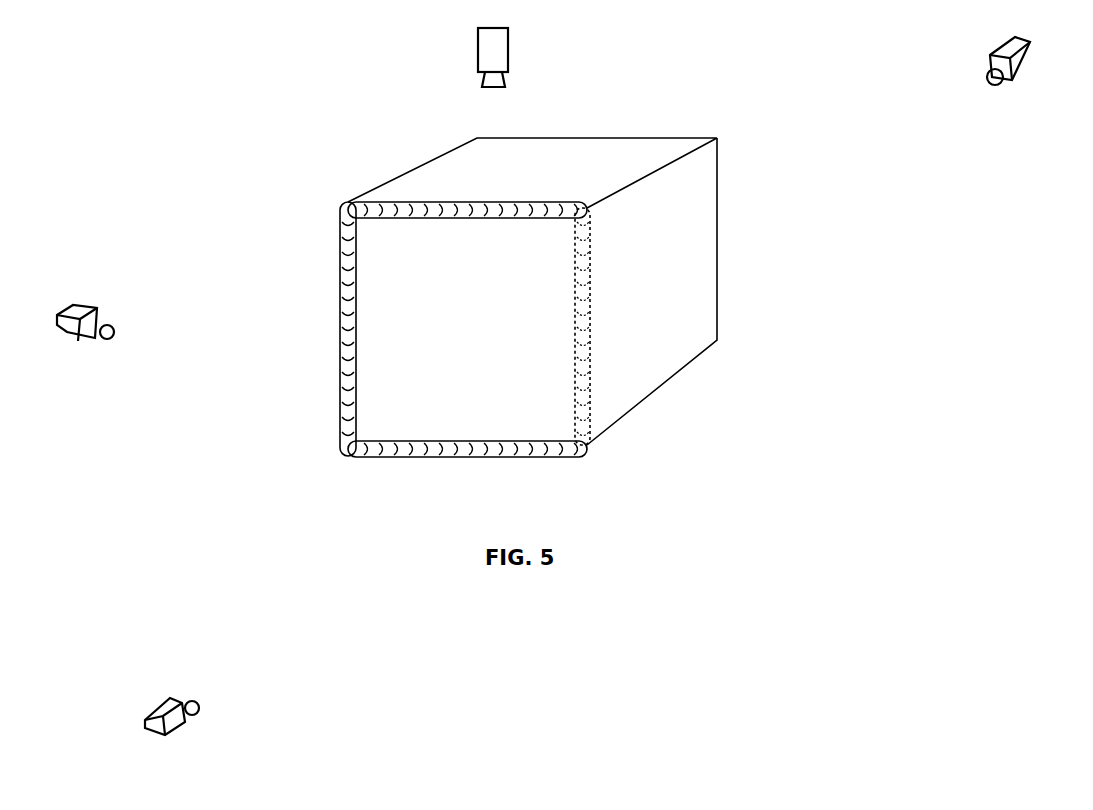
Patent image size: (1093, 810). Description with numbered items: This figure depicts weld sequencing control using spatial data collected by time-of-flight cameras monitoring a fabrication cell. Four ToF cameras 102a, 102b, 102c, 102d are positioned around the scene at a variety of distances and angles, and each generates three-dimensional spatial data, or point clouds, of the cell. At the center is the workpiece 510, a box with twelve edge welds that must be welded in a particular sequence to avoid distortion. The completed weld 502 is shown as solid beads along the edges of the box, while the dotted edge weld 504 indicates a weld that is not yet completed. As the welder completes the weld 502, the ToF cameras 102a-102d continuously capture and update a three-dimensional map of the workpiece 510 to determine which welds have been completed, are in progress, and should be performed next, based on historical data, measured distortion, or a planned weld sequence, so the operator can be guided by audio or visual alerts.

The ToF camera 102a is at (147, 720).
The ToF camera 102b is at (62, 312).
The ToF camera 102c is at (478, 46).
The ToF camera 102d is at (1028, 40).
The weld 502 is at (356, 203).
The hidden (dotted) boundary rail 504 is at (590, 319).
The workpiece 510 is at (538, 138).